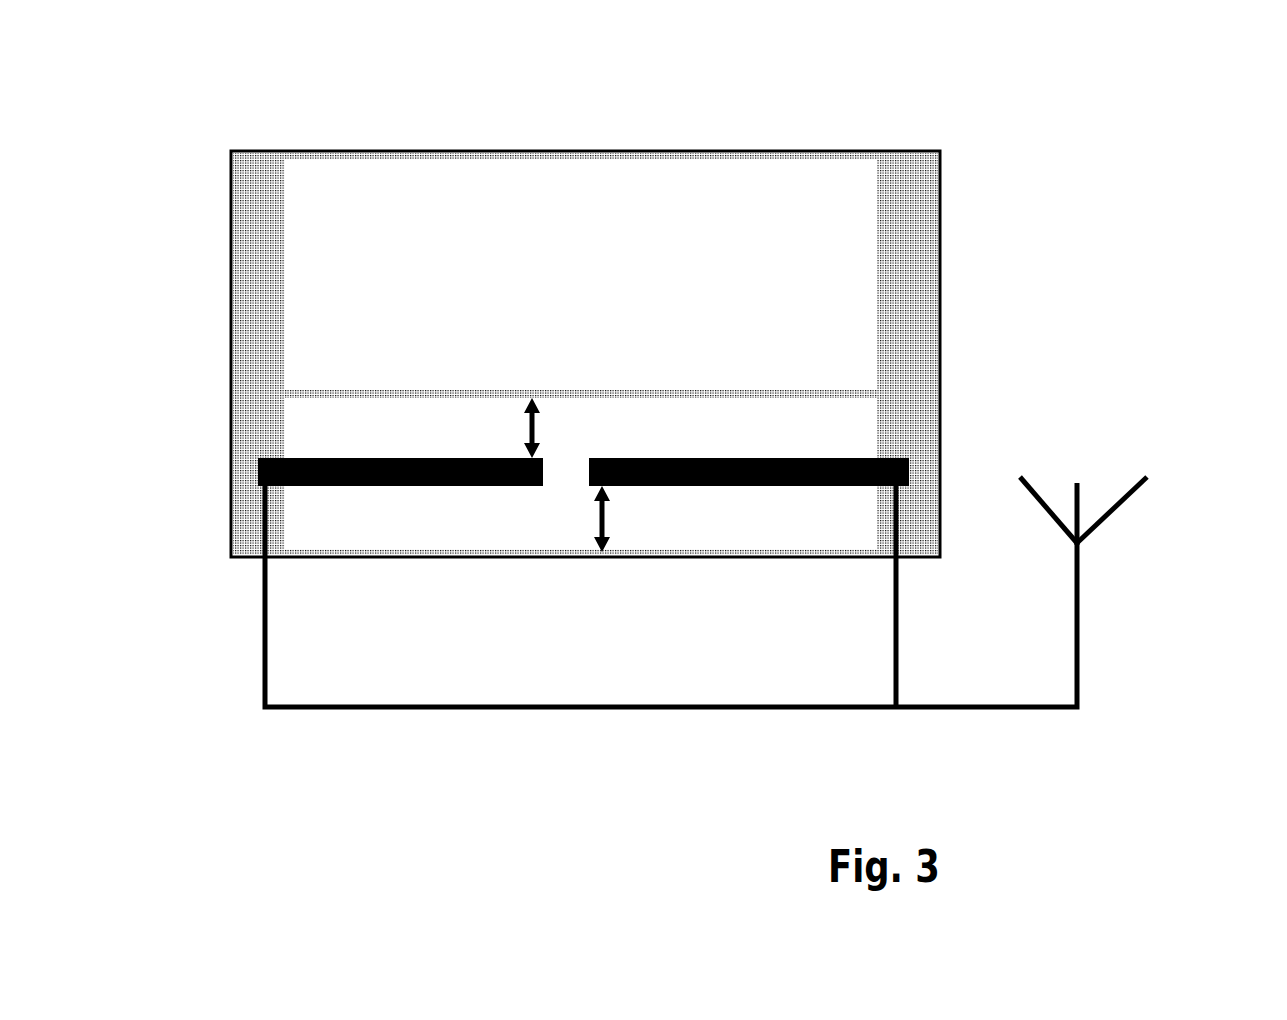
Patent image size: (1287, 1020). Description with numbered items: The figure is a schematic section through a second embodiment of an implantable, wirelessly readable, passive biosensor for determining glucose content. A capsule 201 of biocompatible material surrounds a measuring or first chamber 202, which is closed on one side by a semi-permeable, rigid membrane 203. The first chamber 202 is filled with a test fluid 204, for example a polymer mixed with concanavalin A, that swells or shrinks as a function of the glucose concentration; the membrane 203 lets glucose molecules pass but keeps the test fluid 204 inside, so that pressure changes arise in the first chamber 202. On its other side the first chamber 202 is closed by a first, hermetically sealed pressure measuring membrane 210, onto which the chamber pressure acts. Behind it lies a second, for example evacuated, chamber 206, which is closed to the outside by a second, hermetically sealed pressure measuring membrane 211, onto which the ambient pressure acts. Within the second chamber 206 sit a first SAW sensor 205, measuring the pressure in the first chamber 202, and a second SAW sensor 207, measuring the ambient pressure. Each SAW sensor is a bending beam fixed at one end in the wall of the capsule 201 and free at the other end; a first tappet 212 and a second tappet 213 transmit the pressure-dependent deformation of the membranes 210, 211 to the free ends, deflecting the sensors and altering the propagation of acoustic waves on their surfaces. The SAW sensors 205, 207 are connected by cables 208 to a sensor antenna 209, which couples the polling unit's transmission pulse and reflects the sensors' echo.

The capsule 201 is at (935, 213).
The first chamber 202 is at (400, 253).
The semi-permeable rigid membrane 203 is at (306, 151).
The test fluid 204 is at (790, 183).
The first SAW sensor 205 is at (443, 476).
The second chamber 206 is at (397, 447).
The second SAW sensor 207 is at (663, 476).
The cables 208 is at (263, 655).
The sensor antenna 209 is at (1123, 503).
The first pressure measuring membrane 210 is at (810, 390).
The second pressure measuring membrane 211 is at (345, 558).
The first tappet 212 is at (564, 254).
The second tappet 213 is at (566, 653).